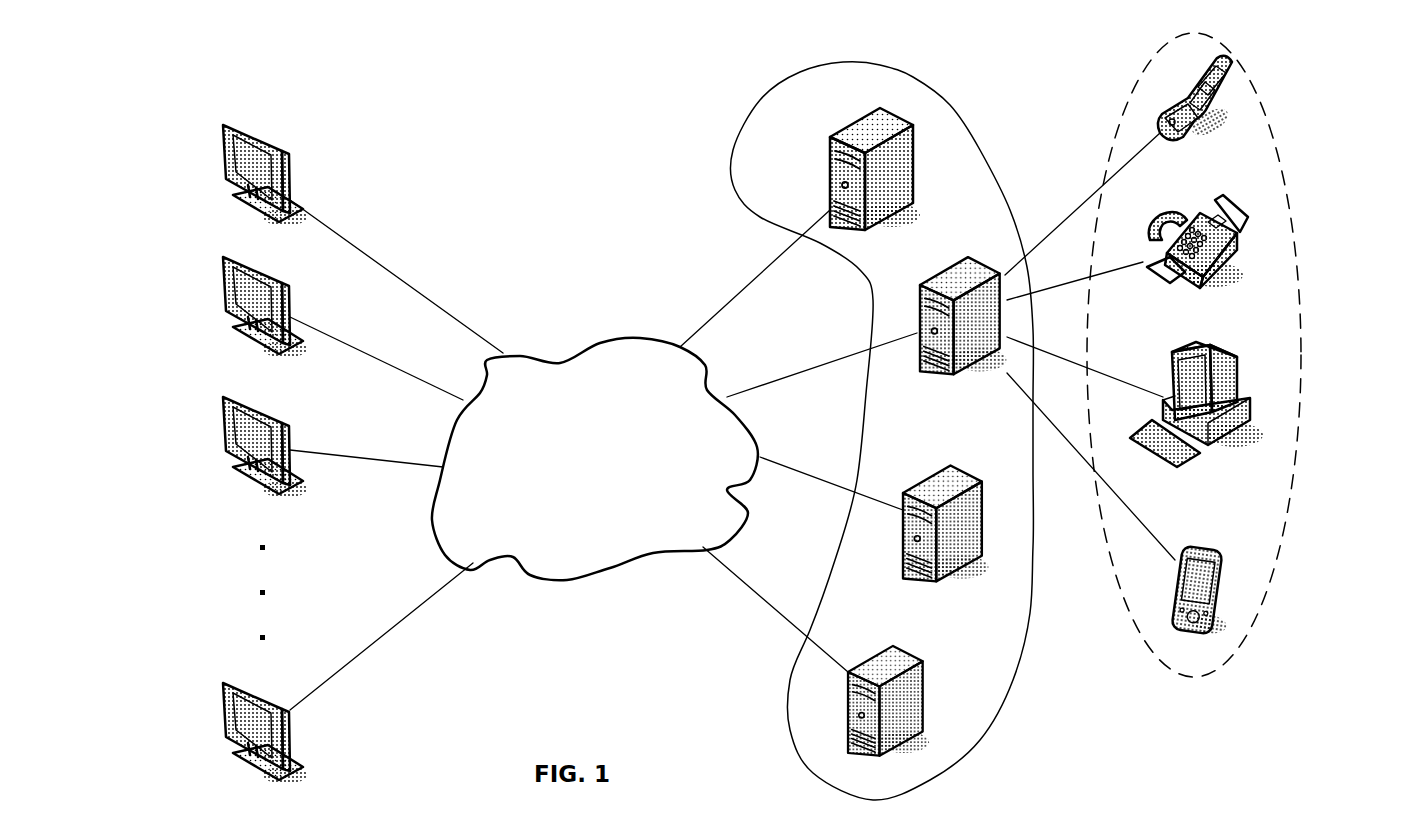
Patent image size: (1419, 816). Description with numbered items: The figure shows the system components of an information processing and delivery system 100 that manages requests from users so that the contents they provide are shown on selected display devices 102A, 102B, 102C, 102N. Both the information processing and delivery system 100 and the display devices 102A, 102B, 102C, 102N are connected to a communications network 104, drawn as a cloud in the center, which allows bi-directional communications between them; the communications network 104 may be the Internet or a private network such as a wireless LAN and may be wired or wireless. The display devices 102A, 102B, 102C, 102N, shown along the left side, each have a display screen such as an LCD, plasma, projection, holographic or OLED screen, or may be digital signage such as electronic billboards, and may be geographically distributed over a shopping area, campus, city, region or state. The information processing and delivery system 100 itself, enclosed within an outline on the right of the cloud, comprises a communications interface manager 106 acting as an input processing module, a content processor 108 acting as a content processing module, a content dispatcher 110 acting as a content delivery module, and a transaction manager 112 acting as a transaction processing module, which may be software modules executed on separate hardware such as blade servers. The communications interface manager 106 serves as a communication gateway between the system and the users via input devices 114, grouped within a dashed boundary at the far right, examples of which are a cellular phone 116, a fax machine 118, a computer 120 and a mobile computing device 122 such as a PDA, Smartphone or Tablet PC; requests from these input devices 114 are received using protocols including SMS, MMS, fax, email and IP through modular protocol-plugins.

The information processing and delivery system 100 is at (721, 156).
The display device 102A is at (222, 136).
The display device 102B is at (222, 273).
The display device 102C is at (224, 428).
The display device 102N is at (226, 702).
The communications network 104 is at (600, 343).
The communications interface manager 106 is at (975, 258).
The content processor 108 is at (880, 108).
The content dispatcher 110 is at (988, 557).
The transaction manager 112 is at (937, 735).
The input devices 114 is at (1101, 150).
The cellular phone 116 is at (1233, 83).
The fax machine 118 is at (1247, 257).
The computer 120 is at (1250, 413).
The mobile computing device 122 is at (1218, 597).